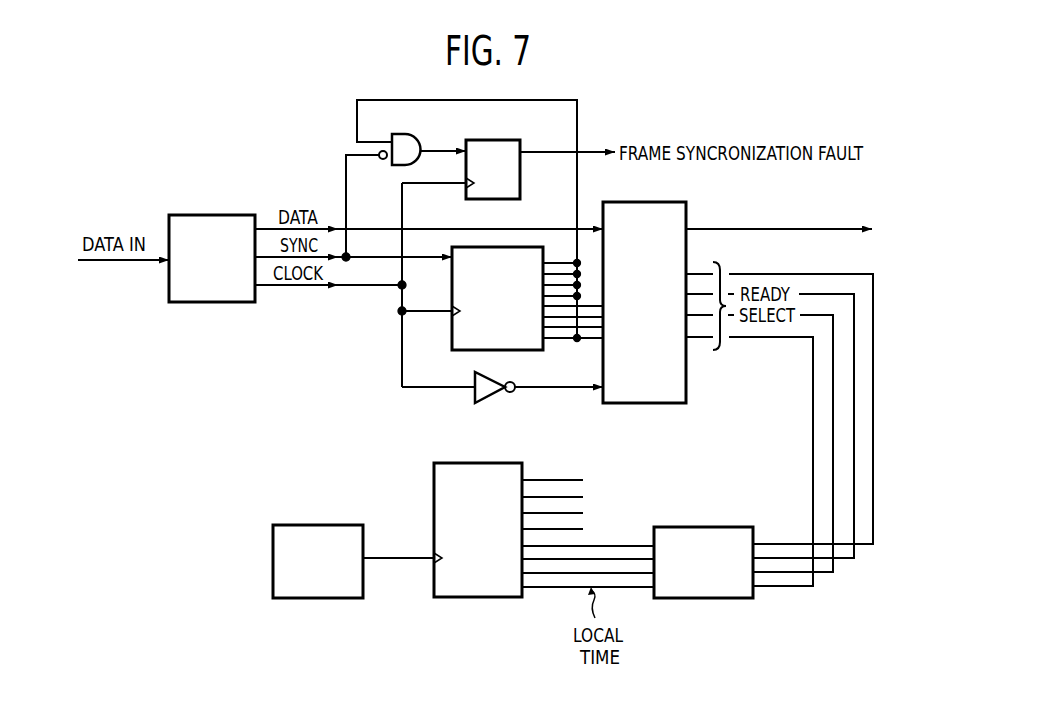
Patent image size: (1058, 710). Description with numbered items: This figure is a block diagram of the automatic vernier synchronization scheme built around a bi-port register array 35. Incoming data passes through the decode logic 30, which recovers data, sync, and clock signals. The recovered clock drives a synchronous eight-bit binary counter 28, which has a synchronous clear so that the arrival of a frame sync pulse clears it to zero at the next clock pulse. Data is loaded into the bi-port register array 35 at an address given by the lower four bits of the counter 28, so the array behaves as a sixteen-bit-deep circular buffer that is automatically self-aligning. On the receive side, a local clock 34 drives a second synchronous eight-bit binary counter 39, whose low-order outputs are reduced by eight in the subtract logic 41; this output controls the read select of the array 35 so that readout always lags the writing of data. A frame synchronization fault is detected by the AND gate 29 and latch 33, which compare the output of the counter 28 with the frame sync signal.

The decode logic 30 is at (220, 303).
The AND gate 29 is at (415, 136).
The latch 33 is at (520, 188).
The synchronous 8-bit binary counter 28 is at (450, 338).
The bi-port register array 35 is at (648, 404).
The second synchronous 8-bit binary counter 39 is at (491, 462).
The local clock 34 is at (325, 525).
The subtract logic 41 is at (700, 525).